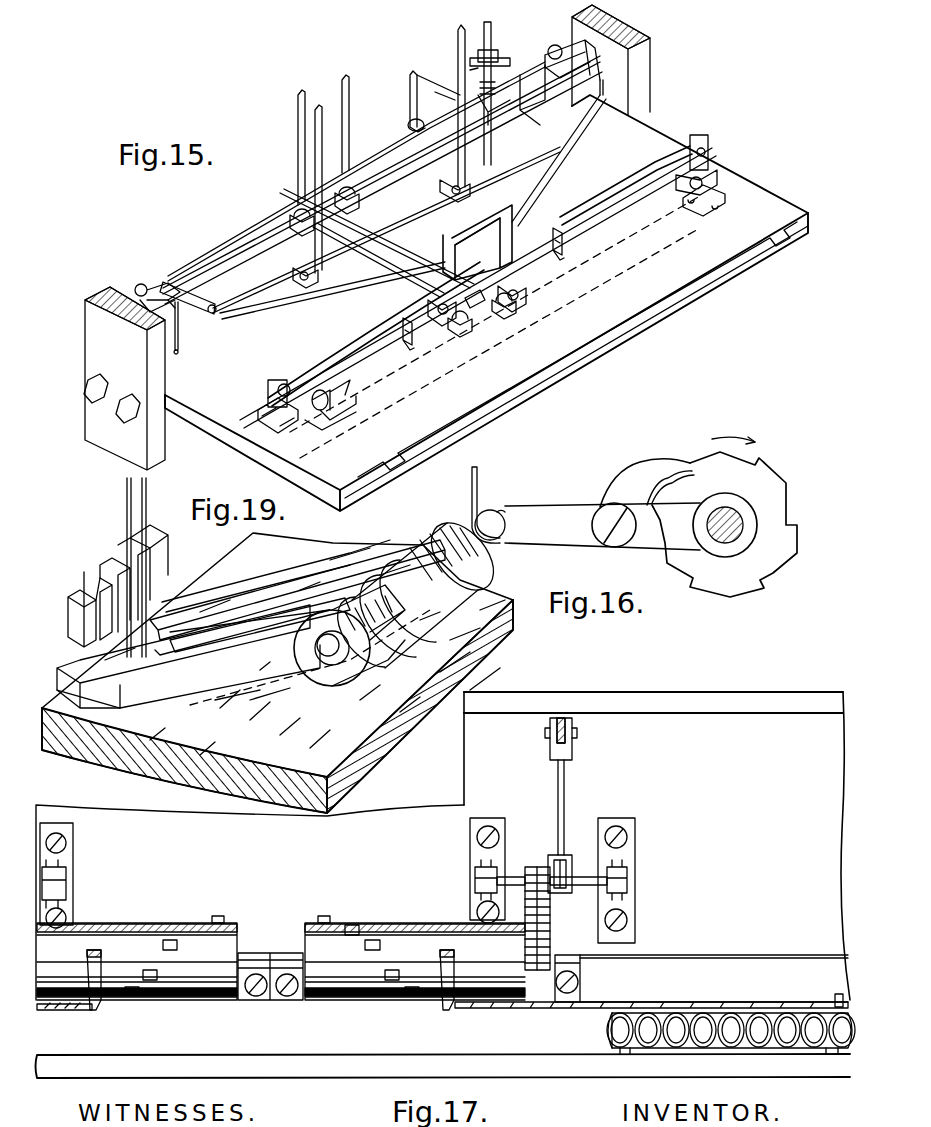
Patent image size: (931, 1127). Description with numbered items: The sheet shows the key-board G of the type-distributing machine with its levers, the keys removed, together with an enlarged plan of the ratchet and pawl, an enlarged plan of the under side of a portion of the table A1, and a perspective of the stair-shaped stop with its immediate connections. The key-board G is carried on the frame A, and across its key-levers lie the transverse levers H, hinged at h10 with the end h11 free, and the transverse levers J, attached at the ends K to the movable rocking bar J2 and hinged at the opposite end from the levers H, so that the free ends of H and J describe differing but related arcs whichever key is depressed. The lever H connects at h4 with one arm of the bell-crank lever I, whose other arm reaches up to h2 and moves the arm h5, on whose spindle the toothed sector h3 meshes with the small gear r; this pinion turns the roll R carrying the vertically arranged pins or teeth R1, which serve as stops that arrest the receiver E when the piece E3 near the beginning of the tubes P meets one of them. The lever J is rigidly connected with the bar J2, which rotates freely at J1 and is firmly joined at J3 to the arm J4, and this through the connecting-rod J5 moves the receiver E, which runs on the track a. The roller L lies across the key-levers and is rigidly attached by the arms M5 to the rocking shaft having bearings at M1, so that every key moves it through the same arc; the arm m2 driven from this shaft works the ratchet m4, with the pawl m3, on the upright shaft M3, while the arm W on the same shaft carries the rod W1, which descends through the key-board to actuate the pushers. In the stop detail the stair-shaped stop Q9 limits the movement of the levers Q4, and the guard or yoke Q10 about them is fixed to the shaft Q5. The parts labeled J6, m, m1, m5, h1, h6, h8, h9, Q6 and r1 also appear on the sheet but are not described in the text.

In FIG. 15, the frame A is at (655, 63).
In FIG. 15, the key-board G is at (486, 303).
In FIG. 15, the transverse lever H is at (478, 298).
In FIG. 15, the bell-crank lever I is at (480, 192).
In FIG. 15, the transverse lever J is at (445, 255).
In FIG. 15, the bearing of bar J2 J1 is at (290, 222).
In FIG. 15, the rocking bar J2 is at (377, 243).
In FIG. 15, the connection of bar J2 to arm J4 J3 is at (288, 187).
In FIG. 15, the arm J4 is at (358, 115).
In FIG. 17, the connecting-rod J5 is at (273, 989).
In FIG. 17, the rack strip J6 is at (530, 1008).
In FIG. 15, the attachment ends of levers J K is at (480, 287).
In FIG. 15, the roller L is at (527, 113).
In FIG. 15, the bearings of shaft M M1 is at (160, 280).
In FIG. 15, the upright shaft M3 is at (492, 35).
In FIG. 16, the upright shaft M3 is at (745, 528).
In FIG. 15, the arms M5 is at (382, 180).
In FIG. 15, the arm W is at (140, 283).
In FIG. 15, the rod W1 is at (180, 335).
In FIG. 15, the arm m is at (410, 101).
In FIG. 15, the hook m' m1 is at (438, 73).
In FIG. 16, the hook m' m1 is at (478, 474).
In FIG. 15, the arm m2 is at (482, 70).
In FIG. 16, the arm m2 is at (587, 526).
In FIG. 15, the pawl m3 is at (501, 98).
In FIG. 16, the pawl m3 is at (647, 483).
In FIG. 15, the ratchet m4 is at (500, 47).
In FIG. 16, the ratchet m4 is at (706, 478).
In FIG. 15, the link m5 is at (445, 91).
In FIG. 15, the bracket h' h1 is at (326, 268).
In FIG. 15, the free end of transverse lever h11 is at (483, 290).
In FIG. 17, the connection of bell-crank lever to arm h5 h2 is at (574, 730).
In FIG. 17, the toothed sector h3 is at (551, 912).
In FIG. 15, the connection of lever H to bell-crank lever h4 is at (566, 238).
In FIG. 17, the arm h5 is at (565, 800).
In FIG. 17, the bearing h6 is at (550, 868).
In FIG. 17, the shaft h8 is at (505, 880).
In FIG. 17, the bushing h9 is at (70, 868).
In FIG. 15, the fulcrum of transverse levers h10 is at (720, 142).
In FIG. 19, the levers Q4 is at (228, 655).
In FIG. 19, the shaft Q5 is at (450, 560).
In FIG. 19, the rods Q6 is at (156, 486).
In FIG. 19, the stair-shaped stop Q9 is at (68, 610).
In FIG. 19, the yoke Q10 is at (232, 600).
In FIG. 19, the table A1 is at (277, 686).
In FIG. 17, the stop-roll R is at (206, 1000).
In FIG. 17, the pins or teeth R1 is at (222, 916).
In FIG. 17, the small gear r is at (540, 985).
In FIG. 17, the block r' r1 is at (272, 960).
In FIG. 17, the receiver E is at (708, 1058).
In FIG. 17, the stop piece E3 is at (838, 994).
In FIG. 17, the tubes P is at (606, 1030).
In FIG. 17, the track a is at (443, 1066).